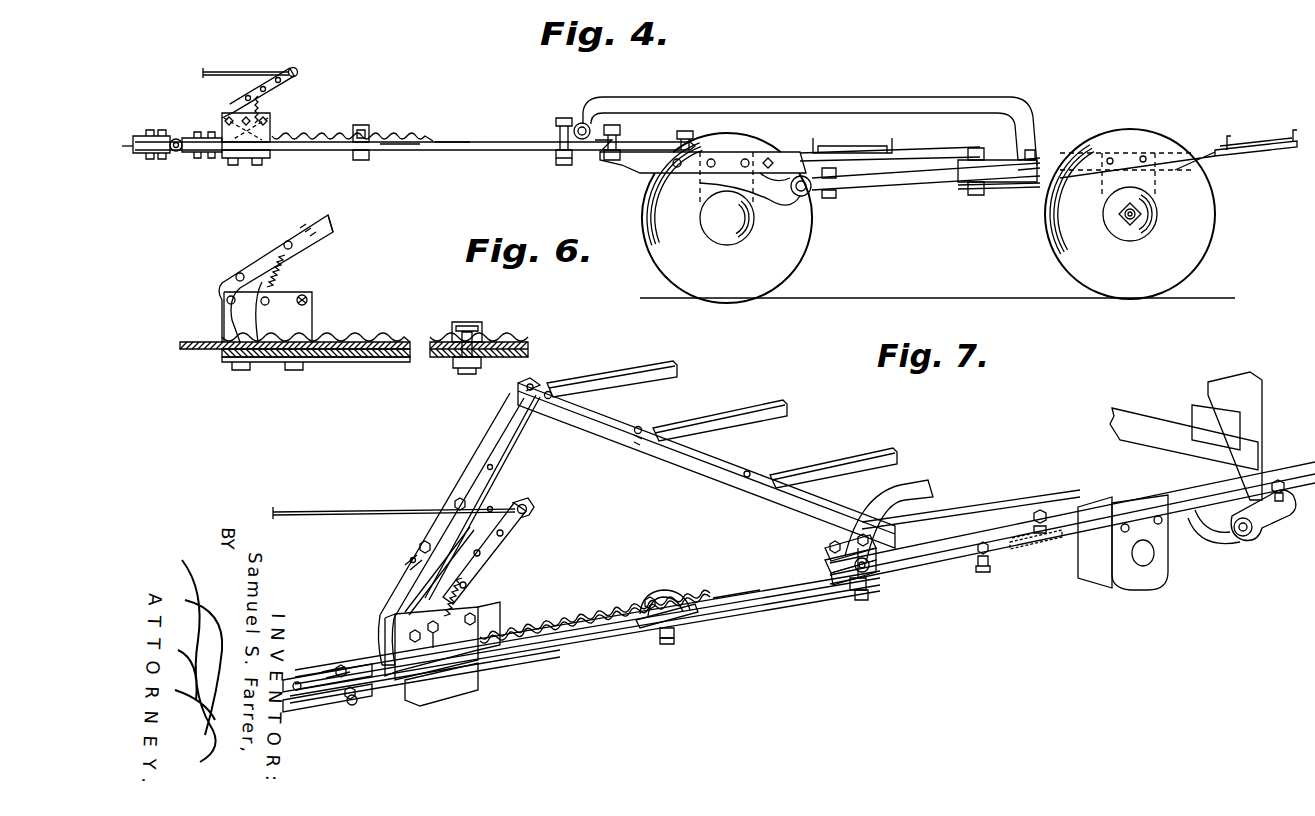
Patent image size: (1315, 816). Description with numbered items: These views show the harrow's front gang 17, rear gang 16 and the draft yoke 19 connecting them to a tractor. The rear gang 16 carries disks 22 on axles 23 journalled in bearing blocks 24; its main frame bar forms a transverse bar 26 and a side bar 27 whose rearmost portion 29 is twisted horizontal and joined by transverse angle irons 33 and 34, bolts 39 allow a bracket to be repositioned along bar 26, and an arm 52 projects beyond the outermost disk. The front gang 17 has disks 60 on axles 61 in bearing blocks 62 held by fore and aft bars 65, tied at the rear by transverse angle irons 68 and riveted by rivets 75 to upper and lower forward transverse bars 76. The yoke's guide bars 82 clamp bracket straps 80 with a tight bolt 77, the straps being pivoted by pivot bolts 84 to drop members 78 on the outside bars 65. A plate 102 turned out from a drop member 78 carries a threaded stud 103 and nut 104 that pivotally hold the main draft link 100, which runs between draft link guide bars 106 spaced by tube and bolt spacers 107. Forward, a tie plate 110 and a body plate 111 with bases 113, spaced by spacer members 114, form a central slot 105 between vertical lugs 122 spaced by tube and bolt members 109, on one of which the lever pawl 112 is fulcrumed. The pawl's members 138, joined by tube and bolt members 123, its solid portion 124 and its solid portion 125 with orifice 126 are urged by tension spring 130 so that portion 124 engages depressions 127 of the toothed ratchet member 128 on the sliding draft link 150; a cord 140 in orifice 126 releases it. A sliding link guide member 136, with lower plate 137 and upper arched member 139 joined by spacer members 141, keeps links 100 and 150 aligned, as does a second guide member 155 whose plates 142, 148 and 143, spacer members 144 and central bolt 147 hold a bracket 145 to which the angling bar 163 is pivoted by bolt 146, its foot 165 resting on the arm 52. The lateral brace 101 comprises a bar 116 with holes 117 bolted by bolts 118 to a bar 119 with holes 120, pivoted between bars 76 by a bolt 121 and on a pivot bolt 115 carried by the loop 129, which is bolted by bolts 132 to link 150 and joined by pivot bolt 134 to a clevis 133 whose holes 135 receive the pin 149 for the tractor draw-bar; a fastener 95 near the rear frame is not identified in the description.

In FIG. 4, the rear gang 16 is at (1186, 121).
In FIG. 4, the front gang 17 is at (816, 71).
In FIG. 4, the draft yoke 19 is at (401, 161).
In FIG. 6, the draft yoke 19 is at (415, 326).
In FIG. 7, the draft yoke 19 is at (608, 658).
In FIG. 4, the disks 22 is at (1192, 255).
In FIG. 4, the axles 23 is at (1128, 222).
In FIG. 4, the bearing blocks 24 is at (742, 170).
In FIG. 4, the transverse bar 26 is at (975, 195).
In FIG. 4, the side bar 27 is at (780, 152).
In FIG. 4, the rearmost portion 29 is at (1262, 156).
In FIG. 4, the transverse angle iron 33 is at (1228, 137).
In FIG. 4, the transverse angle iron 34 is at (1292, 134).
In FIG. 4, the bolts 39 is at (965, 165).
In FIG. 4, the arm 52 is at (1010, 190).
In FIG. 4, the disks 60 is at (658, 270).
In FIG. 7, the axles 61 is at (1143, 566).
In FIG. 7, the bearing blocks 62 is at (1097, 582).
In FIG. 7, the fore and aft bars 65 is at (670, 378).
In FIG. 4, the transverse angle irons 68 is at (830, 146).
In FIG. 7, the transverse angle irons 68 is at (1160, 420).
In FIG. 7, the rivets 75 is at (522, 390).
In FIG. 7, the forward transverse bars 76 is at (722, 468).
In FIG. 7, the tight bolt 77 is at (1279, 480).
In FIG. 4, the drop members 78 is at (796, 196).
In FIG. 7, the drop members 78 is at (1205, 540).
In FIG. 4, the bracket straps 80 is at (840, 195).
In FIG. 7, the bracket straps 80 is at (1252, 533).
In FIG. 4, the guide bars 82 is at (926, 180).
In FIG. 7, the guide bars 82 is at (1245, 410).
In FIG. 4, the pivot bolts 84 is at (810, 194).
In FIG. 7, the pivot bolts 84 is at (1245, 537).
In FIG. 4, the bolt 95 is at (1012, 142).
In FIG. 4, the main draft link 100 is at (512, 152).
In FIG. 6, the main draft link 100 is at (396, 360).
In FIG. 7, the main draft link 100 is at (920, 582).
In FIG. 7, the lateral brace 101 is at (514, 485).
In FIG. 4, the plate 102 is at (641, 172).
In FIG. 7, the plate 102 is at (1050, 542).
In FIG. 4, the threaded stud 103 is at (690, 128).
In FIG. 7, the threaded stud 103 is at (1046, 515).
In FIG. 7, the nut 104 is at (1036, 514).
In FIG. 7, the central slot 105 is at (480, 608).
In FIG. 4, the draft link guide bars 106 is at (600, 162).
In FIG. 7, the draft link guide bars 106 is at (932, 527).
In FIG. 4, the tube and bolt spacers 107 is at (622, 140).
In FIG. 7, the tube and bolt spacers 107 is at (983, 572).
In FIG. 4, the tube and bolt members 109 is at (222, 122).
In FIG. 6, the tube and bolt members 109 is at (268, 306).
In FIG. 7, the tube and bolt members 109 is at (433, 636).
In FIG. 4, the tie plate 110 is at (242, 163).
In FIG. 6, the tie plate 110 is at (273, 364).
In FIG. 7, the tie plate 110 is at (482, 697).
In FIG. 7, the body plate 111 is at (488, 638).
In FIG. 4, the lever pawl 112 is at (326, 67).
In FIG. 6, the lever pawl 112 is at (347, 231).
In FIG. 7, the lever pawl 112 is at (527, 536).
In FIG. 7, the bases 113 is at (360, 660).
In FIG. 7, the tube and bolt spacer members 114 is at (358, 662).
In FIG. 7, the pivot bolt 115 is at (326, 672).
In FIG. 7, the bar 116 is at (408, 562).
In FIG. 7, the holes 117 is at (420, 547).
In FIG. 7, the bolts 118 is at (455, 503).
In FIG. 7, the bar 119 is at (497, 433).
In FIG. 7, the holes 120 is at (530, 437).
In FIG. 7, the bolt 121 is at (550, 392).
In FIG. 6, the vertical lugs 122 is at (313, 300).
In FIG. 7, the vertical lugs 122 is at (392, 624).
In FIG. 6, the tube and bolt members 123 is at (287, 241).
In FIG. 7, the tube and bolt members 123 is at (483, 552).
In FIG. 6, the solid portion 124 is at (228, 322).
In FIG. 7, the solid portion 124 is at (386, 612).
In FIG. 4, the solid portion 125 is at (297, 68).
In FIG. 7, the solid portion 125 is at (530, 514).
In FIG. 7, the orifice 126 is at (534, 505).
In FIG. 6, the depressions 127 is at (376, 323).
In FIG. 7, the depressions 127 is at (569, 621).
In FIG. 4, the toothed ratchet member 128 is at (312, 126).
In FIG. 7, the toothed ratchet member 128 is at (605, 603).
In FIG. 4, the loop 129 is at (200, 155).
In FIG. 7, the loop 129 is at (338, 667).
In FIG. 4, the tension spring 130 is at (260, 108).
In FIG. 6, the tension spring 130 is at (284, 283).
In FIG. 7, the tension spring 130 is at (466, 584).
In FIG. 7, the bolts 132 is at (353, 693).
In FIG. 4, the clevis 133 is at (150, 158).
In FIG. 7, the clevis 133 is at (340, 714).
In FIG. 4, the pivot bolt 134 is at (177, 152).
In FIG. 7, the pivot bolt 134 is at (357, 707).
In FIG. 7, the holes 135 is at (300, 694).
In FIG. 4, the sliding link guide member 136 is at (383, 122).
In FIG. 6, the sliding link guide member 136 is at (494, 320).
In FIG. 7, the sliding link guide member 136 is at (663, 595).
In FIG. 7, the lower plate 137 is at (655, 643).
In FIG. 7, the members 138 is at (468, 529).
In FIG. 6, the upper arched member 139 is at (463, 321).
In FIG. 7, the upper arched member 139 is at (697, 614).
In FIG. 4, the cord 140 is at (246, 58).
In FIG. 7, the cord 140 is at (374, 498).
In FIG. 6, the tube and bolt spacer members 141 is at (462, 370).
In FIG. 7, the tube and bolt spacer members 141 is at (646, 597).
In FIG. 7, the plate 142 is at (862, 602).
In FIG. 7, the plate 143 is at (830, 548).
In FIG. 7, the tube and bolt spacer members 144 is at (848, 545).
In FIG. 4, the bracket 145 is at (579, 123).
In FIG. 7, the bracket 145 is at (868, 570).
In FIG. 4, the bolt 146 is at (568, 152).
In FIG. 7, the bolt 146 is at (878, 582).
In FIG. 7, the central bolt 147 is at (845, 578).
In FIG. 7, the plate 148 is at (826, 556).
In FIG. 4, the pin 149 is at (150, 133).
In FIG. 4, the sliding draft link 150 is at (452, 150).
In FIG. 6, the sliding draft link 150 is at (528, 346).
In FIG. 7, the sliding draft link 150 is at (790, 596).
In FIG. 4, the second guide member 155 is at (555, 128).
In FIG. 7, the second guide member 155 is at (856, 600).
In FIG. 4, the angling bar 163 is at (920, 102).
In FIG. 7, the angling bar 163 is at (935, 483).
In FIG. 4, the foot 165 is at (1030, 152).